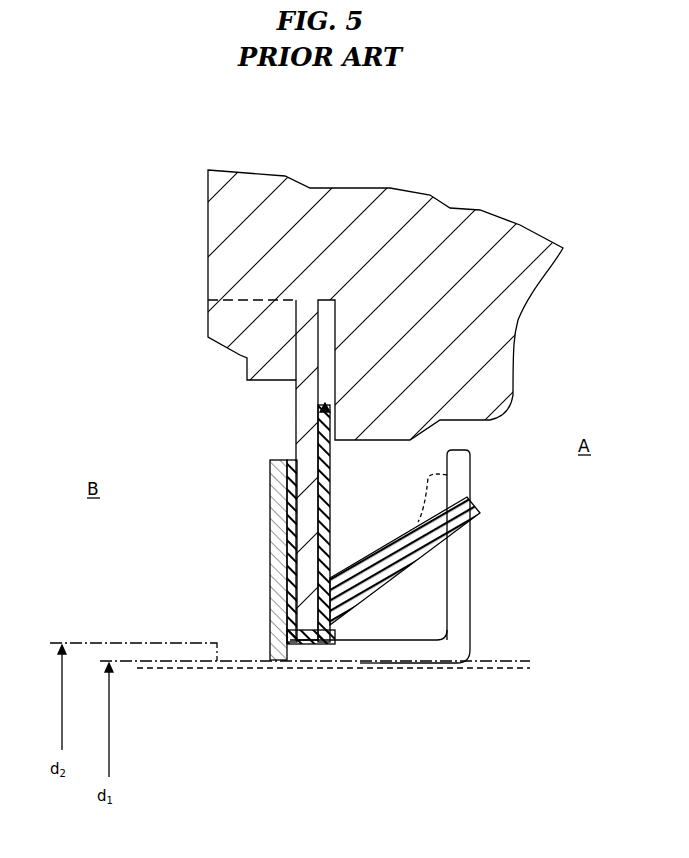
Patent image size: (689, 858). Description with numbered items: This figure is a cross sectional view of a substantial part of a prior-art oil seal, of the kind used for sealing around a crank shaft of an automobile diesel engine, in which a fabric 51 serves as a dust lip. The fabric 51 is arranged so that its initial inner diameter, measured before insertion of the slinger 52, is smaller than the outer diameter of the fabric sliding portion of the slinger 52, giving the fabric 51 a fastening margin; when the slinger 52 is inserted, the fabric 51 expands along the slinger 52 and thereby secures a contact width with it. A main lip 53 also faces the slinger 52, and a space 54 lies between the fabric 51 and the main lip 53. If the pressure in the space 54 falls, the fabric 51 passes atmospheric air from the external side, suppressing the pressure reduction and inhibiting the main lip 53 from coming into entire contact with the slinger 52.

The fabric 51 is at (270, 600).
The slinger 52 is at (470, 617).
The main lip 53 is at (400, 535).
The space 54 is at (392, 616).